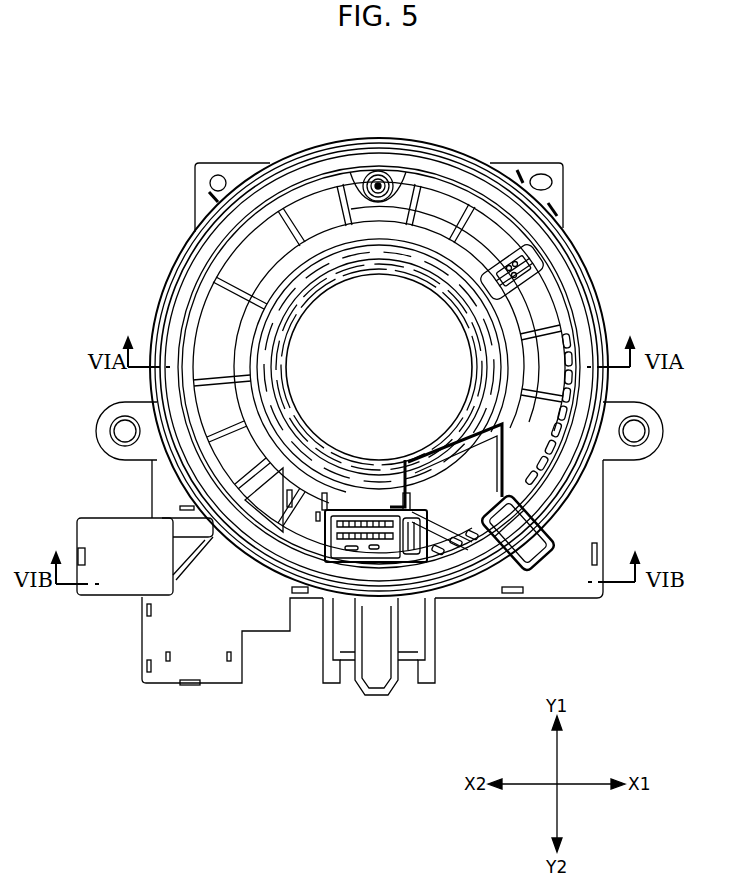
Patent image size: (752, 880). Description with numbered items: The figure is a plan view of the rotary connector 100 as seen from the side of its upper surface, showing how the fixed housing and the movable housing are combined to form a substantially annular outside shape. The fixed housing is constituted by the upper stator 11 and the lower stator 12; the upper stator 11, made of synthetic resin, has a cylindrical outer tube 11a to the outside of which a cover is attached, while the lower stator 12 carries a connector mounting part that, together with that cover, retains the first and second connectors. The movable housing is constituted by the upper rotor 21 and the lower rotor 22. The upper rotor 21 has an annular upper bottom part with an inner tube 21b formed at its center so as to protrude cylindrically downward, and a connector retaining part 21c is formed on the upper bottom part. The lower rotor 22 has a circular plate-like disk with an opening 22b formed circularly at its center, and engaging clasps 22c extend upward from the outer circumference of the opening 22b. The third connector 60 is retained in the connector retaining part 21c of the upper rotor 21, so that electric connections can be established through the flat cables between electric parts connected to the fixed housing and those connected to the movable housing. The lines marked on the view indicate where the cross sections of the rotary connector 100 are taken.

The rotary connector 100 is at (566, 126).
The upper stator 11 is at (578, 528).
The cylindrical outer tube 11a is at (606, 274).
The lower stator 12 is at (563, 202).
The upper rotor 21 is at (314, 170).
The inner tube 21b is at (380, 286).
The connector retaining part 21c is at (420, 558).
The lower rotor 22 is at (303, 424).
The opening 22b is at (418, 317).
The engaging clasps 22c is at (312, 420).
The third connector 60 is at (360, 548).